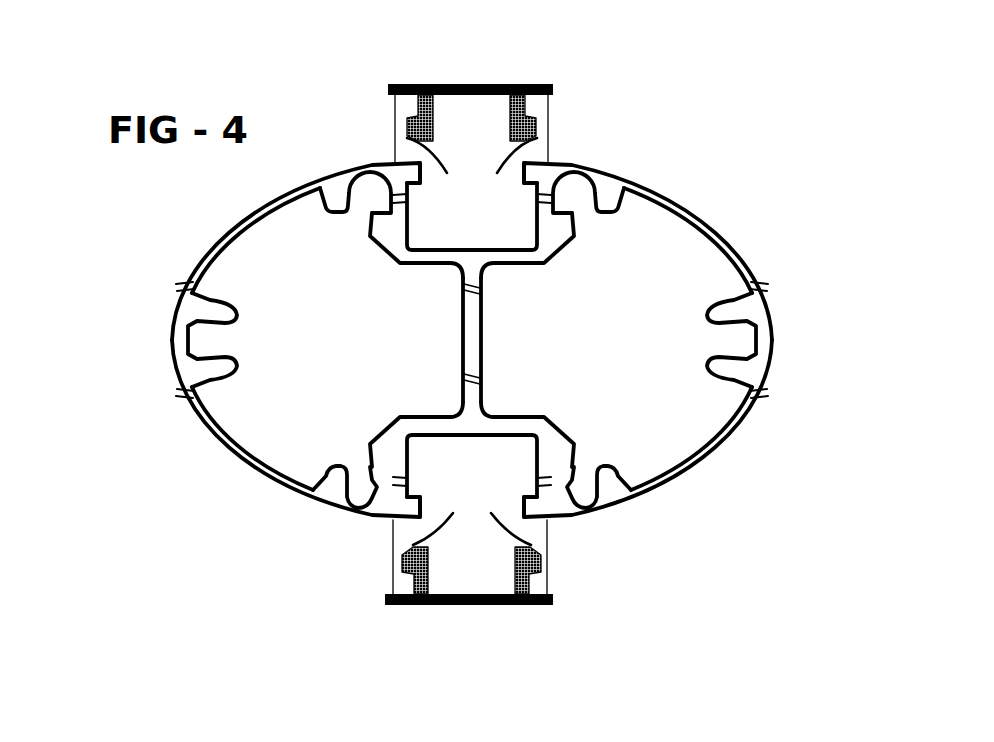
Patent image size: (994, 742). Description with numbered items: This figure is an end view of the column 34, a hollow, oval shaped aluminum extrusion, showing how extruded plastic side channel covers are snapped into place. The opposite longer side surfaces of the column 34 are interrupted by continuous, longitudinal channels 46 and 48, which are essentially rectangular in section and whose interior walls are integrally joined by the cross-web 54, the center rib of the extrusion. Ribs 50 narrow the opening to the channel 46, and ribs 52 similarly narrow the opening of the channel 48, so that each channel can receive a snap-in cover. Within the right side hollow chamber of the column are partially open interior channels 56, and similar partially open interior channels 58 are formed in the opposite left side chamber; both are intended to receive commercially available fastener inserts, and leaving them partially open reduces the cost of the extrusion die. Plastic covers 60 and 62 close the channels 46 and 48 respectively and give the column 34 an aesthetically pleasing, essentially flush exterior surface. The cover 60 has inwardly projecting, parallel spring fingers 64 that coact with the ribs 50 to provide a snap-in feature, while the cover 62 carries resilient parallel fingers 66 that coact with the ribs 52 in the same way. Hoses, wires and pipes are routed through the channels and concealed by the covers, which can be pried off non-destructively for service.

The column 34 is at (735, 243).
The channel 46 is at (436, 240).
The channel 48 is at (527, 440).
The ribs 50 is at (481, 170).
The ribs 52 is at (547, 528).
The cross-web 54 is at (480, 337).
The partially open interior channels 56 is at (594, 186).
The partially open interior channels 58 is at (355, 163).
The plastic cover 60 is at (472, 85).
The plastic cover 62 is at (477, 608).
The spring fingers 64 is at (472, 176).
The resilient parallel fingers 66 is at (472, 517).